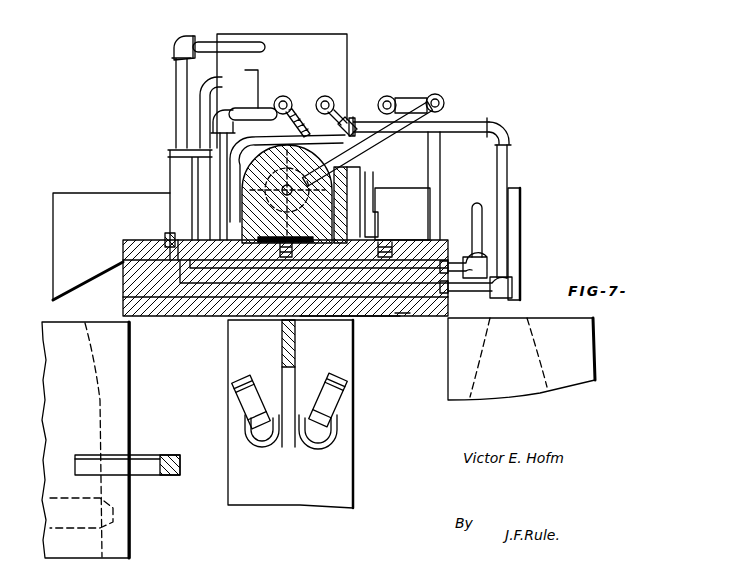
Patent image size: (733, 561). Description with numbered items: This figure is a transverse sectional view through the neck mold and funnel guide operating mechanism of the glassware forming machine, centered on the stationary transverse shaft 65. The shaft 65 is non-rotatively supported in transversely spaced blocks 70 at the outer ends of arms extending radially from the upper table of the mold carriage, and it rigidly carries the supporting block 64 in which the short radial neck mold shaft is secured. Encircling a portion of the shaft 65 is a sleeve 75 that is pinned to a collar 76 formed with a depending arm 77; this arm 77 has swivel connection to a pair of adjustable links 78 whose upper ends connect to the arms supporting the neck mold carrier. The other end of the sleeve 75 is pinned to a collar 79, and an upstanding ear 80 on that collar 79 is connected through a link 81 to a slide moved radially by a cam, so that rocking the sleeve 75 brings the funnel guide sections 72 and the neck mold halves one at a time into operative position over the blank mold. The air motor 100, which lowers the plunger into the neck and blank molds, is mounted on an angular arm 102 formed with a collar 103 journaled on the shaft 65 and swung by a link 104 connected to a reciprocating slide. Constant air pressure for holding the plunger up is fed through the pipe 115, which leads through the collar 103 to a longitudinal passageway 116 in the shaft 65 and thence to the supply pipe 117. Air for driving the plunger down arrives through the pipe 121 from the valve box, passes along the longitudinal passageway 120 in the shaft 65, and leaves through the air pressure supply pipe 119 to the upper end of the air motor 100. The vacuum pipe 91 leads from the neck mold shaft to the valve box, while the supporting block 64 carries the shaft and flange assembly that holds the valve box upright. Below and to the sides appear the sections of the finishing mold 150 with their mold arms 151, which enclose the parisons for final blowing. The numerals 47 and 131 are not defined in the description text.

The air motor 100 is at (353, 74).
The air pressure supply pipe 119 is at (176, 78).
The angular arm 102 is at (200, 103).
The air pressure supply pipe 115 is at (243, 112).
The valve 131 is at (290, 105).
The supporting block 64 is at (344, 132).
The vacuum pipe 91 is at (407, 133).
The pipe 47 is at (438, 176).
The upstanding ear 80 is at (357, 183).
The link 81 is at (378, 176).
The longitudinal passageway 116 is at (413, 238).
The supply pipe 117 is at (478, 213).
The pipe 121 is at (505, 267).
The funnel guide sections 72 is at (62, 184).
The transverse shaft 65 is at (123, 292).
The blocks 70 is at (153, 320).
The longitudinal passageway 120 is at (217, 320).
The collar 103 is at (170, 240).
The link 104 is at (176, 192).
The collar 76 is at (268, 321).
The depending arm 77 is at (288, 378).
The links 78 is at (245, 406).
The sleeve 75 is at (373, 314).
The collar 79 is at (402, 315).
The finishing mold 150 is at (118, 397).
The mold arms 151 is at (133, 461).